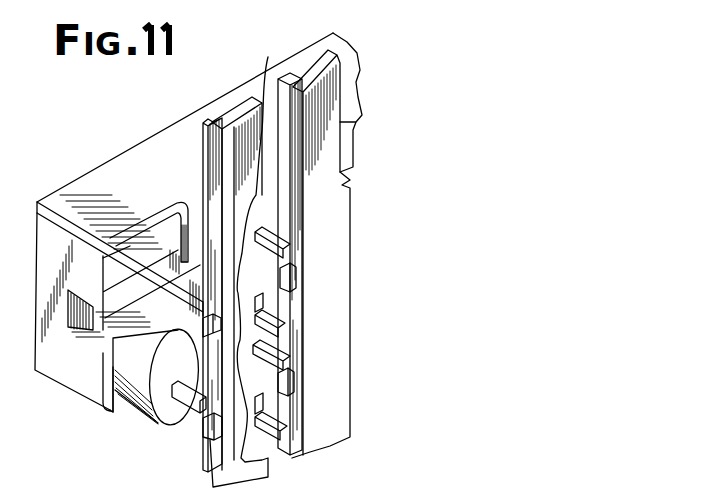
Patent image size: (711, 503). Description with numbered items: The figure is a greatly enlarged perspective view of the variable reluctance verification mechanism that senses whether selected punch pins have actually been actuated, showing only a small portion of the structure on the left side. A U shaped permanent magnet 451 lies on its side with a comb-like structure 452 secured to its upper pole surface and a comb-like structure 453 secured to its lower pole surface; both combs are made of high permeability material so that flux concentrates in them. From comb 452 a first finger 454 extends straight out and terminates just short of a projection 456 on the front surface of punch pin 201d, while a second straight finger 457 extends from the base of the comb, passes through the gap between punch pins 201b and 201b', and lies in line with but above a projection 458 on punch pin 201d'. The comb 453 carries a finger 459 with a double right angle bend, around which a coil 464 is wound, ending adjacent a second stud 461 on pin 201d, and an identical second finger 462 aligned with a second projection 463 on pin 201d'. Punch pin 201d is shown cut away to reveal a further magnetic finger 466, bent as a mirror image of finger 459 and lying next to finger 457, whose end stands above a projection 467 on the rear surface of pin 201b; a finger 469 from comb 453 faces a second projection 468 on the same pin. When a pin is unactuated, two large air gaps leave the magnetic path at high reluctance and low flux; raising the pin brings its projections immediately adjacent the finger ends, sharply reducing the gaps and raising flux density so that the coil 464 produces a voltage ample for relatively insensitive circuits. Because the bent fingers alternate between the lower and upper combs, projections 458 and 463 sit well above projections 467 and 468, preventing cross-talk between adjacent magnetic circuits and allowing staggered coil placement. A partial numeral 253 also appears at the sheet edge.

The comb-like structure 452 is at (110, 168).
The U shaped permanent magnet 451 is at (47, 245).
The first finger 454 is at (133, 267).
The magnetic finger 466 is at (183, 265).
The projection 456 is at (205, 323).
The comb-like structure 453 is at (86, 392).
The coil 464 is at (138, 410).
The finger 459 is at (192, 410).
The second stud 461 is at (217, 432).
The frame member 253 is at (13, 456).
The punch pin 201b is at (192, 279).
The punch pin 201d is at (201, 283).
The punch pin 201b' is at (282, 242).
The second punch pin 201d' is at (339, 231).
The second straight finger 457 is at (300, 250).
The projection 458 is at (296, 272).
The projection 467 is at (264, 331).
The second finger 462 is at (284, 358).
The second projection 463 is at (293, 383).
The finger 469 is at (264, 405).
The second projection 468 is at (272, 430).